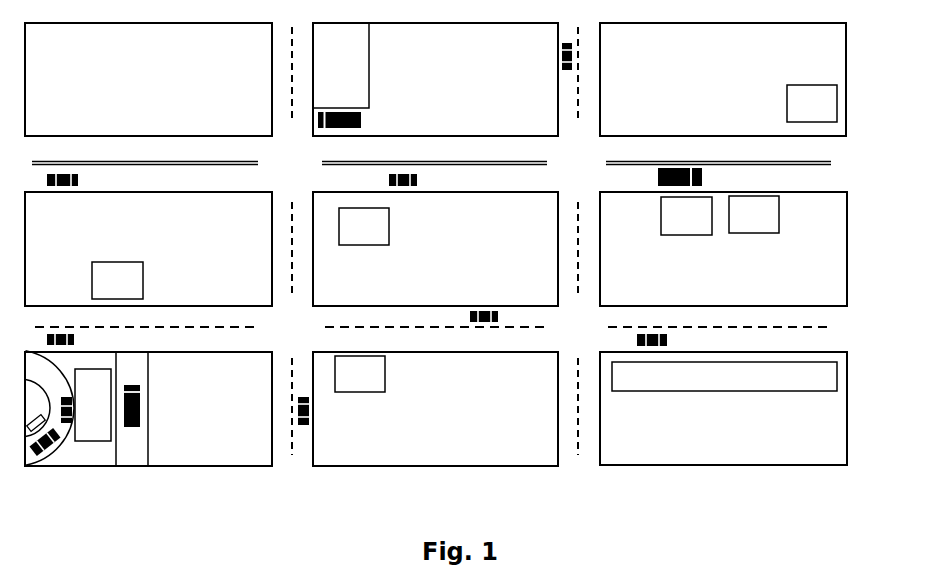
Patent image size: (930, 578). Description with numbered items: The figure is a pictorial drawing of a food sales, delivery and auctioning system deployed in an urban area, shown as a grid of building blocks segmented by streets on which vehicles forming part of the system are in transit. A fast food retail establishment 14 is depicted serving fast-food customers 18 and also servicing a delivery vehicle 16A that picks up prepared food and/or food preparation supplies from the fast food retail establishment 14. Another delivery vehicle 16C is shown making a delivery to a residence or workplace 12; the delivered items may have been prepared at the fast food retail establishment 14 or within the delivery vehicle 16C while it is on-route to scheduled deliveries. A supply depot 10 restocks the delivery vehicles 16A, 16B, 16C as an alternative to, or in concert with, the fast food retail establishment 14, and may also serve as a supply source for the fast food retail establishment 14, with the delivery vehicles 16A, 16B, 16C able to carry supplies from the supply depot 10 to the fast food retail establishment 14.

The supply depot 10 is at (324, 46).
The residence or workplace 12 is at (672, 220).
The fast food retail establishment 14 is at (86, 390).
The delivery vehicle 16A is at (142, 420).
The delivery vehicle 16B is at (366, 117).
The delivery vehicle 16C is at (655, 174).
The fast-food customers 18 is at (58, 446).